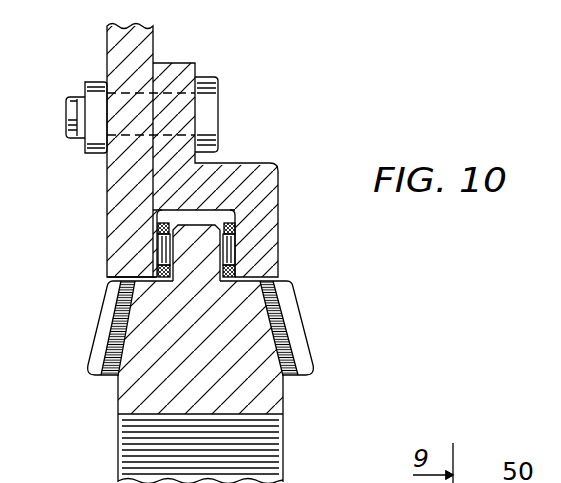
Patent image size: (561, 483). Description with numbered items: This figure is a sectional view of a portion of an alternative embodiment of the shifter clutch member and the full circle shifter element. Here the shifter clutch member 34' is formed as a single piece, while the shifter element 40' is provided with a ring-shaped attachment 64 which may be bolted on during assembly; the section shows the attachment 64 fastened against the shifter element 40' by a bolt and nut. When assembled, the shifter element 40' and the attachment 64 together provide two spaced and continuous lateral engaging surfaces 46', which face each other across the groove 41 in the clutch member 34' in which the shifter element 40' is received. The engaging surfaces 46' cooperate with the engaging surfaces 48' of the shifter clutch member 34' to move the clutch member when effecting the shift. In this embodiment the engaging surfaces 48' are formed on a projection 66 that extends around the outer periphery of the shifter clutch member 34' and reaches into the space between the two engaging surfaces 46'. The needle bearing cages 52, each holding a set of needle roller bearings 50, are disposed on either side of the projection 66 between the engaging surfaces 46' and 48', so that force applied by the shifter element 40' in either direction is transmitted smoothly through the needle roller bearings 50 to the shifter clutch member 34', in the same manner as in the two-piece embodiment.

The shifter element 40' is at (95, 146).
The ring-shaped attachment 64 is at (266, 176).
The projection 66 is at (200, 222).
The groove 41 is at (183, 210).
The needle bearing cage 52 is at (158, 226).
The lateral engaging surface 46' is at (199, 247).
The needle roller bearing 50 is at (162, 252).
The shifter clutch member 34' is at (185, 354).
The engaging surface 48' is at (198, 253).